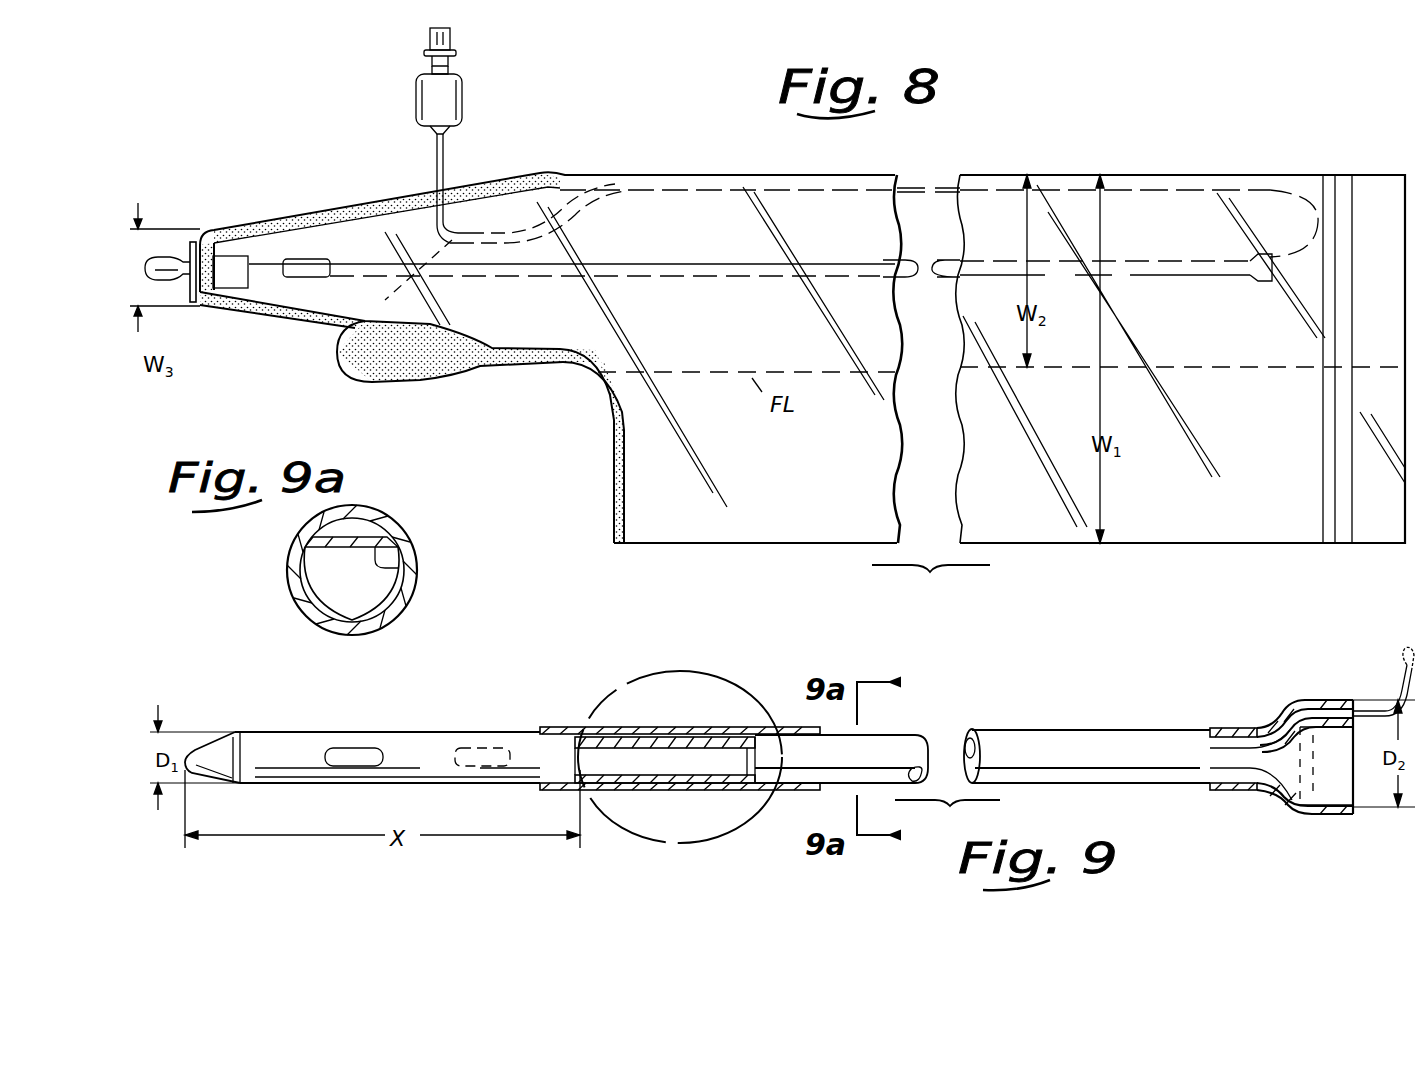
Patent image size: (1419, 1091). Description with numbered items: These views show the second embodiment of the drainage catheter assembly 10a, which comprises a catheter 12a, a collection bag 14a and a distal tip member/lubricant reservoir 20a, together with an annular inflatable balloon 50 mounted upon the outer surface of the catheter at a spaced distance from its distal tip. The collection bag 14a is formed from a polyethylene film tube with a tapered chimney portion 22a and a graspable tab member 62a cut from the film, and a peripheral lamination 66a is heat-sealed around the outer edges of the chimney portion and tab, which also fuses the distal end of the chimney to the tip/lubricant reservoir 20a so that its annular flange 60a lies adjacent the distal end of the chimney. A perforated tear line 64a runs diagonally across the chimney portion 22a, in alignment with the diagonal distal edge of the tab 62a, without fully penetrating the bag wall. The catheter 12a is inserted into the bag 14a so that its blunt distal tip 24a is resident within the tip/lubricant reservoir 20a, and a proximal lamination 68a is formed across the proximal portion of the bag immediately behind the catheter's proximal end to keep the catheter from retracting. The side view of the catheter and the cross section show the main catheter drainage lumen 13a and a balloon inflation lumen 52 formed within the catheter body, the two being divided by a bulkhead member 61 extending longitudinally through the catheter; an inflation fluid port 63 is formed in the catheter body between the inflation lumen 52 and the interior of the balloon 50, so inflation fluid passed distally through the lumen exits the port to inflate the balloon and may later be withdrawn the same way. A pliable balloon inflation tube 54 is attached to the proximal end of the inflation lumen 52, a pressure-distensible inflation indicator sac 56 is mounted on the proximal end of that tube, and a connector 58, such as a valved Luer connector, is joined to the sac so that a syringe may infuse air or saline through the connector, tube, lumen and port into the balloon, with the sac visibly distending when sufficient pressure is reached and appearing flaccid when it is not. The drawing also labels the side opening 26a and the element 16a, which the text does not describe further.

In FIG. 8, the catheter assembly 10a is at (1094, 155).
In FIG. 8, the catheter 12a is at (753, 262).
In FIG. 9, the catheter 12a is at (1033, 748).
In FIG. 9A, the catheter drainage lumen 13a is at (380, 585).
In FIG. 9, the catheter drainage lumen 13a is at (583, 768).
In FIG. 8, the collection bag 14a is at (1253, 522).
In FIG. 8, the distal end of tube 16a is at (1263, 283).
In FIG. 8, the distal tip member/lubricant reservoir 20a is at (238, 289).
In FIG. 8, the chimney portion 22a is at (395, 178).
In FIG. 9, the blunt distal tip 24a is at (218, 750).
In FIG. 9, the side opening 26a is at (378, 752).
In FIG. 8, the annular inflatable balloon 50 is at (313, 278).
In FIG. 9, the annular inflatable balloon 50 is at (665, 740).
In FIG. 9A, the balloon inflation lumen 52 is at (362, 527).
In FIG. 9, the balloon inflation lumen 52 is at (1282, 705).
In FIG. 8, the balloon inflation tube 54 is at (440, 165).
In FIG. 9, the balloon inflation tube 54 is at (1390, 678).
In FIG. 8, the inflation indicator sac 56 is at (455, 95).
In FIG. 8, the connector 58 is at (452, 44).
In FIG. 8, the annular flange 60a is at (192, 243).
In FIG. 9A, the bulkhead member 61 is at (400, 566).
In FIG. 9, the bulkhead member 61 is at (722, 785).
In FIG. 8, the graspable tab member 62a is at (440, 350).
In FIG. 9, the inflation fluid port 63 is at (668, 750).
In FIG. 8, the perforated tear line 64a is at (447, 241).
In FIG. 8, the peripheral lamination 66a is at (613, 470).
In FIG. 8, the proximal lamination 68a is at (1340, 176).